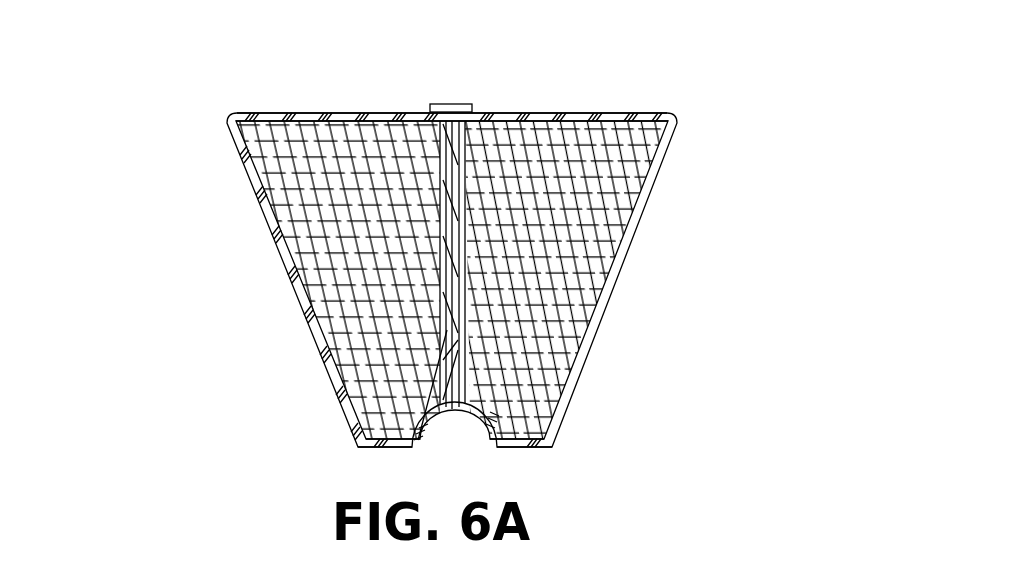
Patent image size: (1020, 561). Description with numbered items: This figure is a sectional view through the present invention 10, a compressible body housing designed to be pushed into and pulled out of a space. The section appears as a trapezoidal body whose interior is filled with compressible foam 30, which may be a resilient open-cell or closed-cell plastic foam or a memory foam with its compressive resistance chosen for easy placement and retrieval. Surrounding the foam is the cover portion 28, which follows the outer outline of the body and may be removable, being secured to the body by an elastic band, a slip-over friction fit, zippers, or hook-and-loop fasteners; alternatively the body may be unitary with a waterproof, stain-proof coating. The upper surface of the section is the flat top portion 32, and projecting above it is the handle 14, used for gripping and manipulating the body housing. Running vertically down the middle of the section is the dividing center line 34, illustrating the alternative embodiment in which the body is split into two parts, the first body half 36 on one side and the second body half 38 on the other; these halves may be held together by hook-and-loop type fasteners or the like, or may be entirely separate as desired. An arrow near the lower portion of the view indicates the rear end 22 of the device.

The present invention 10 is at (120, 112).
The handle 14 is at (451, 104).
The rear end 22 is at (148, 327).
The cover portion 28 is at (268, 115).
The compressible foam 30 is at (310, 228).
The flat top portion 32 is at (631, 112).
The dividing center line 34 is at (463, 355).
The first body half 36 is at (373, 390).
The second body half 38 is at (553, 393).